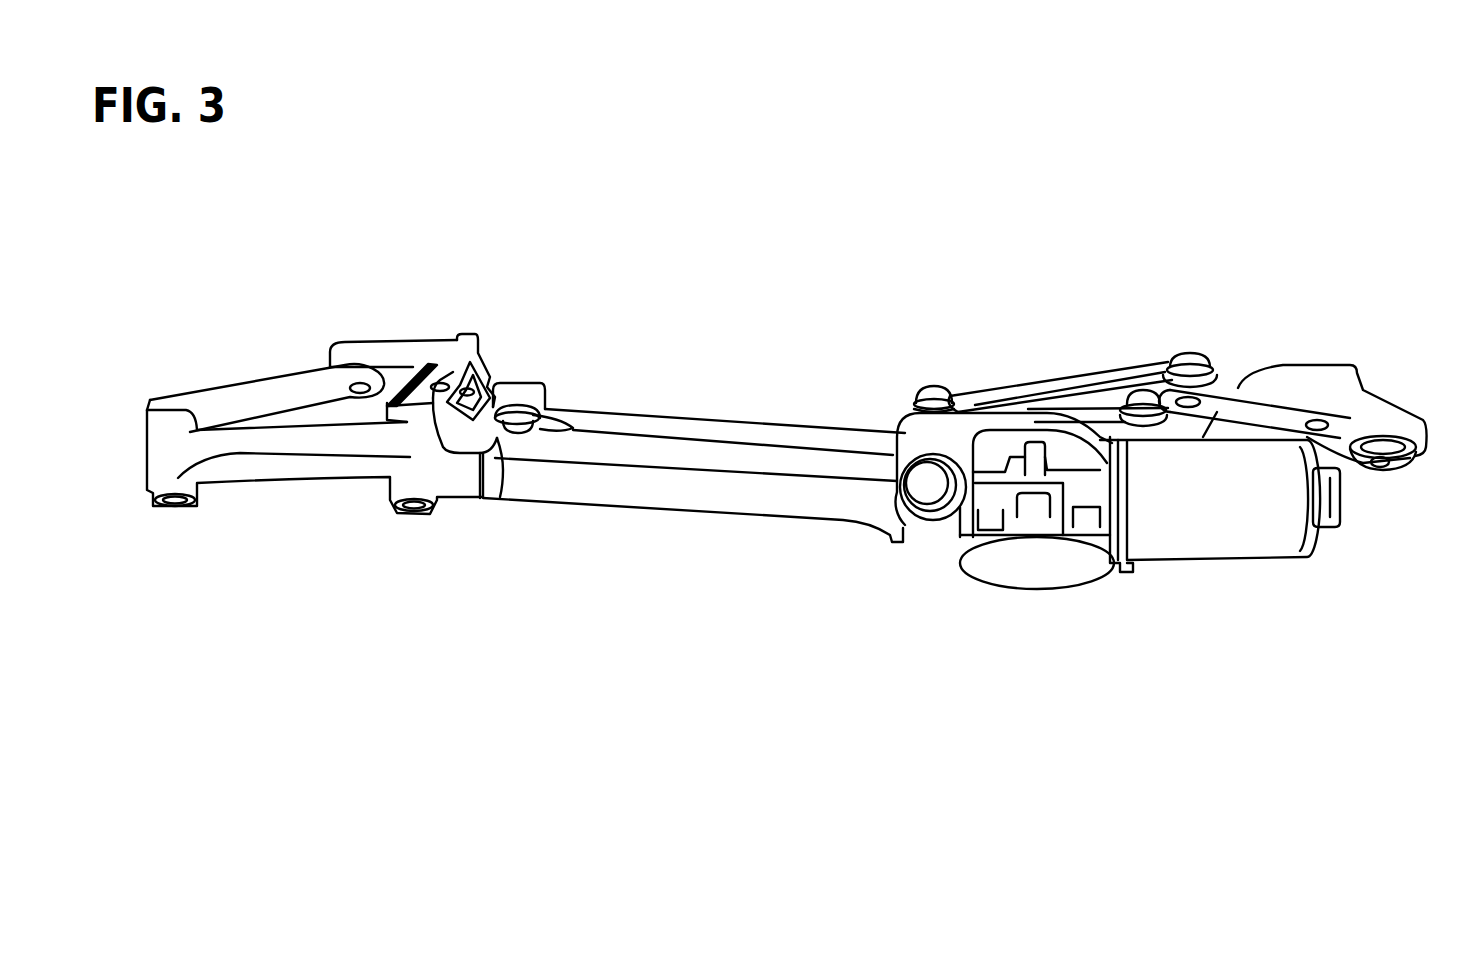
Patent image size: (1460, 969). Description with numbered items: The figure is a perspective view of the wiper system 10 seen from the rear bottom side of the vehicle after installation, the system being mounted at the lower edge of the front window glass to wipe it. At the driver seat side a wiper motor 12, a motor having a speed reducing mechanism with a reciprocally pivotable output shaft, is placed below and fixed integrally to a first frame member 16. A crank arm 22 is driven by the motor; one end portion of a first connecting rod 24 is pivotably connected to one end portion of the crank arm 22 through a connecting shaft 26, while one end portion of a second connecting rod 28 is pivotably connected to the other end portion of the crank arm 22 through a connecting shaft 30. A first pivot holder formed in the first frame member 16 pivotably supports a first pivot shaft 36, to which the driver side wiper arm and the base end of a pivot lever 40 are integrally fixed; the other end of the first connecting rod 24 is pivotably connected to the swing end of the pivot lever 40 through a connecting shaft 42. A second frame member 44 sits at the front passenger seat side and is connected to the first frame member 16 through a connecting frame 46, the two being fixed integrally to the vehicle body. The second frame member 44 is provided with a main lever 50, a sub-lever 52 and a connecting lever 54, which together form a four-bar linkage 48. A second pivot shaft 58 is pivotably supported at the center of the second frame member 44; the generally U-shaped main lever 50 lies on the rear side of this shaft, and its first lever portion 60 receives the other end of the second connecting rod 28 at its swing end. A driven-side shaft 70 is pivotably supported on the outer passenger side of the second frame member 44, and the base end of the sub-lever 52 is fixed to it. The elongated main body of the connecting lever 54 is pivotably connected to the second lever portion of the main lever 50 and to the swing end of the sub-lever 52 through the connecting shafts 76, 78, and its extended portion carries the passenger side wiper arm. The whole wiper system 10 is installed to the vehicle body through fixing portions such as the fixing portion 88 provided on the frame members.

The wiper system 10 is at (702, 253).
The wiper motor 12 is at (1058, 588).
The first frame member 16 is at (889, 509).
The crank arm 22 is at (1089, 406).
The first connecting rod 24 is at (1016, 386).
The connecting shaft 26 is at (936, 386).
The second connecting rod 28 is at (712, 410).
The connecting shaft 30 is at (1146, 389).
The first pivot shaft 36 is at (1383, 428).
The pivot lever 40 is at (1296, 382).
The connecting shaft 42 is at (1194, 352).
The second frame member 44 is at (293, 480).
The connecting frame 46 is at (645, 516).
The four-bar linkage 48 is at (430, 303).
The main lever 50 is at (501, 466).
The sub-lever 52 is at (233, 366).
The connecting lever 54 is at (378, 338).
The second pivot shaft 58 is at (407, 518).
The first lever portion 60 is at (530, 437).
The driven-side shaft 70 is at (173, 510).
The connecting shaft 76 is at (420, 362).
The connecting shaft 78 is at (323, 361).
The fixing portion 88 is at (933, 521).